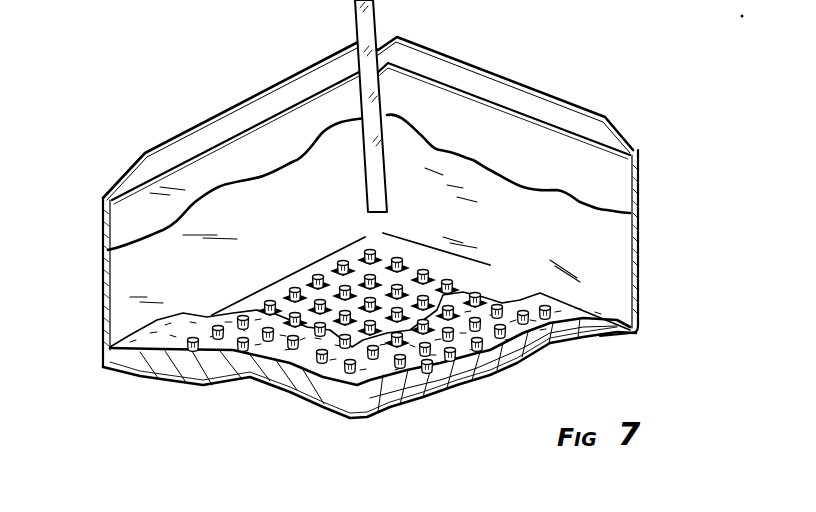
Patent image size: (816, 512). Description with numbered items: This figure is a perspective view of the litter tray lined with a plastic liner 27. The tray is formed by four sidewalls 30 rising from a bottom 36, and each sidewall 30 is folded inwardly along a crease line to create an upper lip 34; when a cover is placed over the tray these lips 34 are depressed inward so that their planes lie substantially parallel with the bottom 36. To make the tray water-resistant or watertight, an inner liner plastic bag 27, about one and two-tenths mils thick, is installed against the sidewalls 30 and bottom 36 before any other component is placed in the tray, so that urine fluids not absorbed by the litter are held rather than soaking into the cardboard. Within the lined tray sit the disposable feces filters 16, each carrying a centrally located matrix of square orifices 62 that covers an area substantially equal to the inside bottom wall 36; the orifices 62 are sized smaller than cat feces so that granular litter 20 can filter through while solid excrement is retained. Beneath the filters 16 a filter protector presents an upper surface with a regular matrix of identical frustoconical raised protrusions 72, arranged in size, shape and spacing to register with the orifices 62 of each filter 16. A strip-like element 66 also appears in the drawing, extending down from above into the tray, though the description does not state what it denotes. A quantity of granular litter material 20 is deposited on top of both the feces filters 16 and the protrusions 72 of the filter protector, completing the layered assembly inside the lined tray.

The disposable feces filter 16 is at (623, 283).
The litter material 20 is at (153, 343).
The plastic liner 27 is at (623, 333).
The sidewall 30 is at (106, 243).
The lip 34 is at (145, 153).
The bottom 36 is at (307, 382).
The orifice 62 is at (457, 280).
The strip electrode 66 is at (362, 16).
The raised protrusion 72 is at (357, 360).